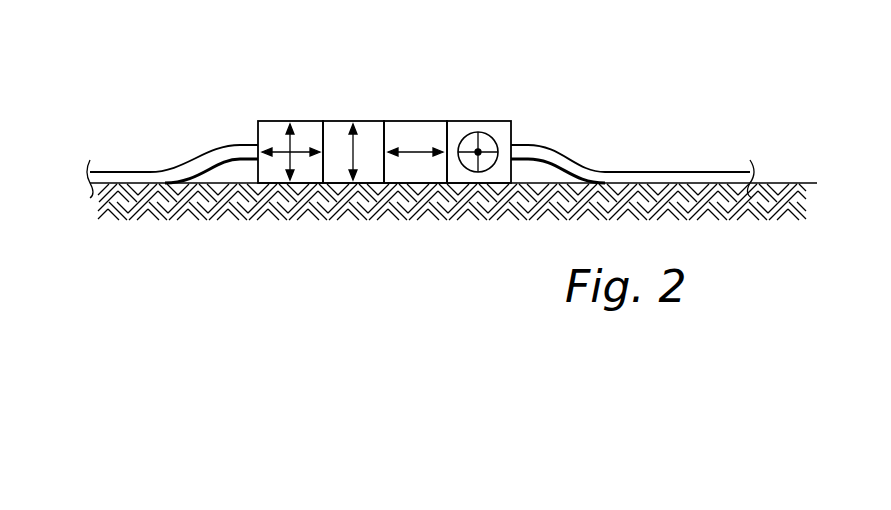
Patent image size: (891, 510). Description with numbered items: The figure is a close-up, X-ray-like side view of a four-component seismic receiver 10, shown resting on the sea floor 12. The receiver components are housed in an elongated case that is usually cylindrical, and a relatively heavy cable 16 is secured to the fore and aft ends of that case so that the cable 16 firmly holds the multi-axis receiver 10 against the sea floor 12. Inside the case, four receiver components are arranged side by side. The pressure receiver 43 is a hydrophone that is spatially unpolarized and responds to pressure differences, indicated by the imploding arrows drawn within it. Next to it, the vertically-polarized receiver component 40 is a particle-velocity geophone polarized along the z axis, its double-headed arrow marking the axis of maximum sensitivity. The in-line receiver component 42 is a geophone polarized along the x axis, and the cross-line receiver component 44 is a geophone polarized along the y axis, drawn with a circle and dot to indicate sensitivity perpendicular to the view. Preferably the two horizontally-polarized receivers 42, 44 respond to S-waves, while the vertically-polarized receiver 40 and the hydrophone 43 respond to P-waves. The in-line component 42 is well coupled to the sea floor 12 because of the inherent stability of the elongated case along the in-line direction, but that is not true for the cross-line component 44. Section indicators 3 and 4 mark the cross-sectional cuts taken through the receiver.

The four-component receiver 10 is at (284, 41).
The sea floor 12 is at (794, 183).
The cable 16 is at (553, 145).
The vertically-polarized receiver component 40 is at (348, 119).
The in-line receiver component 42 is at (415, 119).
The pressure receiver 43 is at (287, 119).
The cross-line receiver component 44 is at (478, 119).
The section line 3-3' 3 is at (477, 35).
The section line 4-4' 4 is at (218, 56).